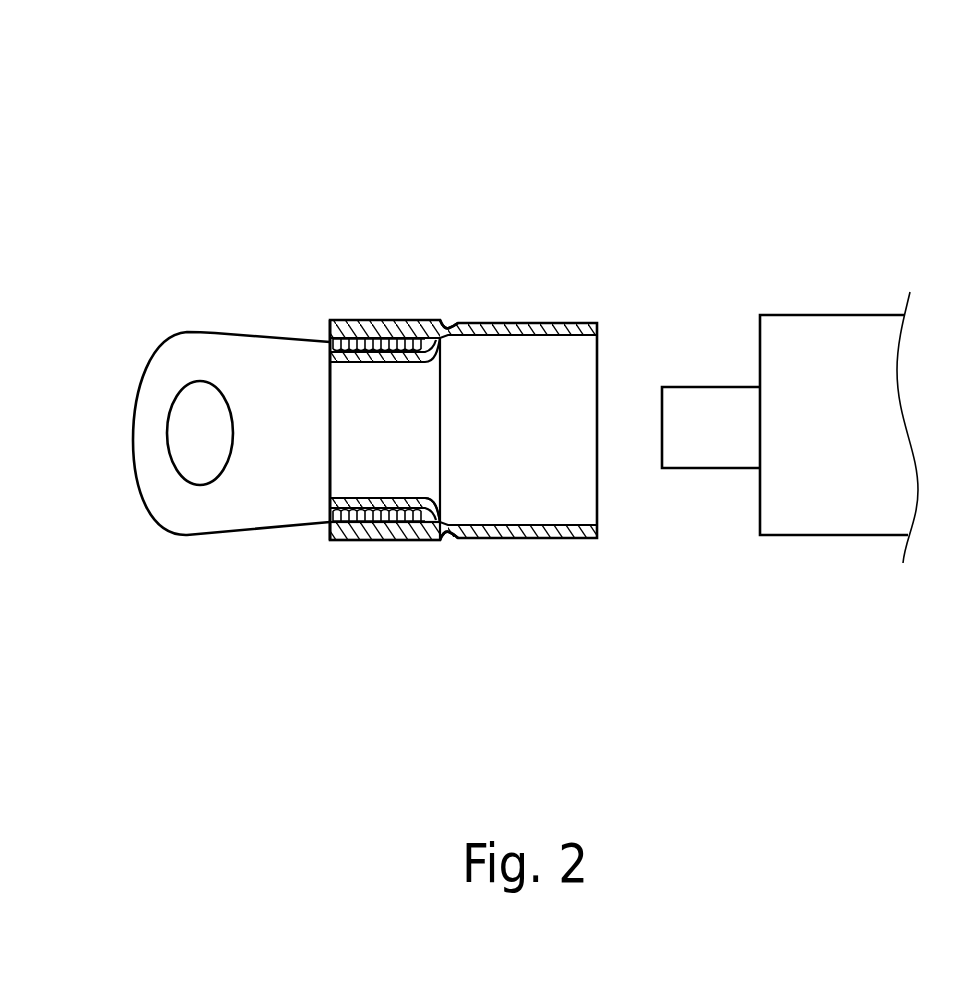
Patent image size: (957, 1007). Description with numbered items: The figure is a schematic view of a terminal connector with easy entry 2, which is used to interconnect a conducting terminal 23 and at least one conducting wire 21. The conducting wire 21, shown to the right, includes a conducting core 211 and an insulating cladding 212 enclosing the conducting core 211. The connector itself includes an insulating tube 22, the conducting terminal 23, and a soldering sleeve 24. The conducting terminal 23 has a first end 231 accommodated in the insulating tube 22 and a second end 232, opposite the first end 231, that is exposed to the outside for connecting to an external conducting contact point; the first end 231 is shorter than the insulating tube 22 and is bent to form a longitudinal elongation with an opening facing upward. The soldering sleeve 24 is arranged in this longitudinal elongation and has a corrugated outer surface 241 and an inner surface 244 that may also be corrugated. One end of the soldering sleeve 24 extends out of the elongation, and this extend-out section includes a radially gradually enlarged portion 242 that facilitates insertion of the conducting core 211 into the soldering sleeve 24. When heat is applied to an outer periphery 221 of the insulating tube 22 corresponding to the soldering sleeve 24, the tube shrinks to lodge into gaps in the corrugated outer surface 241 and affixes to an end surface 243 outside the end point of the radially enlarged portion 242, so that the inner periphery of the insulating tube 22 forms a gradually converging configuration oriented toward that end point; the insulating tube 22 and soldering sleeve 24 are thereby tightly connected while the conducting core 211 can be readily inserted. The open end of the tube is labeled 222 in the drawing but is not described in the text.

The terminal connector with easy entry 2 is at (122, 142).
The conducting wire 21 is at (693, 137).
The conducting core 211 is at (725, 425).
The insulating cladding 212 is at (860, 385).
The insulating tube 22 is at (547, 323).
The outer periphery 221 is at (367, 320).
The open end of sleeve 222 is at (328, 330).
The conducting terminal 23 is at (206, 333).
The first end 231 is at (402, 320).
The second end 232 is at (150, 422).
The soldering sleeve 24 is at (330, 541).
The outer surface 241 is at (413, 541).
The radially gradually enlarged portion 242 is at (428, 597).
The end surface 243 is at (443, 541).
The inner surface 244 is at (373, 541).